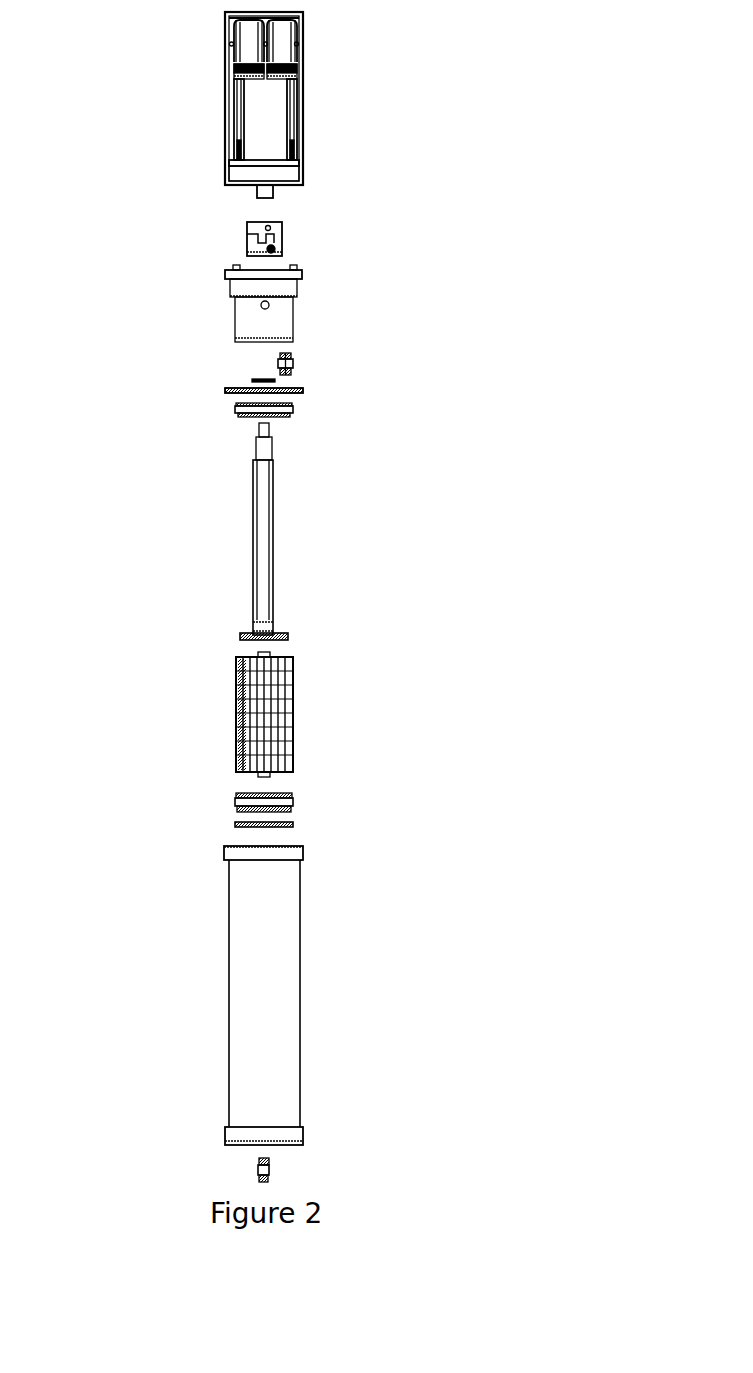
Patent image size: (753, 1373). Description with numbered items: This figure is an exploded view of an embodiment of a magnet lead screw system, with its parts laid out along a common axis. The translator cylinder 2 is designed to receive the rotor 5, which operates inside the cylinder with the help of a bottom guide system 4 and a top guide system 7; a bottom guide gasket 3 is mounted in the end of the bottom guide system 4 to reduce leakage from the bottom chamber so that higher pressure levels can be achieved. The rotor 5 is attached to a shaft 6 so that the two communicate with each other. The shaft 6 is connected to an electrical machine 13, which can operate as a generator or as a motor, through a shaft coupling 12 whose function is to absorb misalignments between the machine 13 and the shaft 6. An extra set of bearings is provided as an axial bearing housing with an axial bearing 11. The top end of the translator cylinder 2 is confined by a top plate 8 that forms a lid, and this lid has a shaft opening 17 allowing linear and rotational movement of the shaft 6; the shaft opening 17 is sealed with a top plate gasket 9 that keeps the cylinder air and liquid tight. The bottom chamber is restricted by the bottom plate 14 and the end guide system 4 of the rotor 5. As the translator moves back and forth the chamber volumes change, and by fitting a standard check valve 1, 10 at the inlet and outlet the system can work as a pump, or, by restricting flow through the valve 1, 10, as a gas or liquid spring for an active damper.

The check valve 1 is at (258, 1165).
The translator cylinder 2 is at (271, 861).
The bottom guide gasket 3 is at (234, 824).
The bottom guide system 4 is at (278, 794).
The rotor 5 is at (264, 711).
The shaft 6 is at (268, 638).
The top guide system 7 is at (296, 413).
The top plate 8 is at (226, 394).
The top plate gasket 9 is at (250, 380).
The check valve 10 is at (294, 360).
The axial bearing housing with axial bearing 11 is at (268, 312).
The shaft coupling 12 is at (246, 233).
The electrical machine 13 is at (250, 103).
The bottom plate 14 is at (231, 1139).
The shaft opening 17 is at (276, 388).